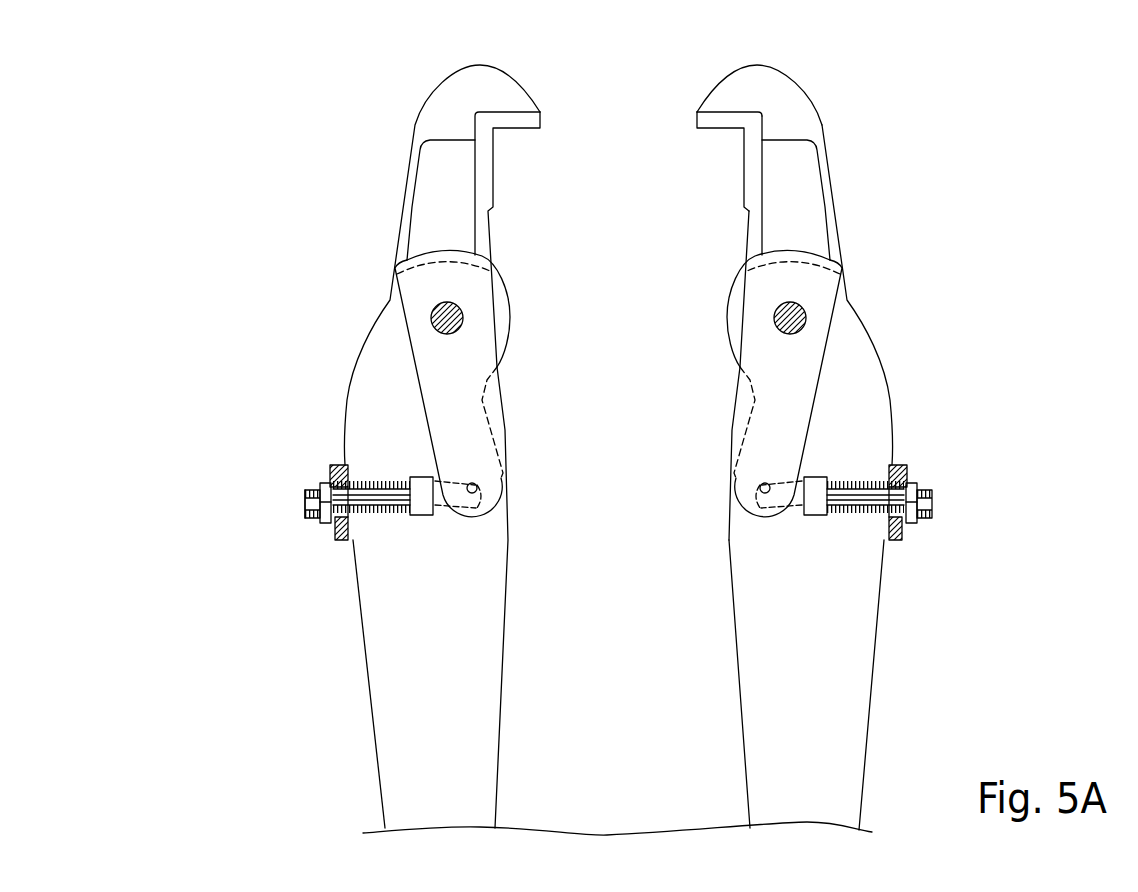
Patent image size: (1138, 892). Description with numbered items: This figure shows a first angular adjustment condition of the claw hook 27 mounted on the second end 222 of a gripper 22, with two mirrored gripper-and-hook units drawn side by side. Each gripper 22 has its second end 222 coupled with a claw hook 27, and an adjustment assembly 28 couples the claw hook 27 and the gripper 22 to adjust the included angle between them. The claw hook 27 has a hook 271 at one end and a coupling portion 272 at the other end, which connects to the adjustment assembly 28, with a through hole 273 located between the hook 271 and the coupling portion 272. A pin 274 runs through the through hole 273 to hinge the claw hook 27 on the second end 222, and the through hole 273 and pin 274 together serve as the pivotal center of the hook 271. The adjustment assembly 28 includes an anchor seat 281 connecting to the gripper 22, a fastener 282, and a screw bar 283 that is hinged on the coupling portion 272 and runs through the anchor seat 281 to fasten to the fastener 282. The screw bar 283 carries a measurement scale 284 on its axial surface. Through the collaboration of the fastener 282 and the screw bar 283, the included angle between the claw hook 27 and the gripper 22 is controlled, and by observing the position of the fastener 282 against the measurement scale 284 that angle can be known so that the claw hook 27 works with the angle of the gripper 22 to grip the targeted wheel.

The gripper 22 is at (855, 625).
The second end 222 is at (853, 347).
The claw hook 27 is at (700, 92).
The hook 271 is at (780, 100).
The coupling portion 272 is at (743, 482).
The through hole 273 is at (777, 312).
The pin 274 is at (777, 325).
The adjustment assembly 28 is at (313, 460).
The anchor seat 281 is at (323, 480).
The fastener 282 is at (327, 525).
The screw bar 283 is at (308, 517).
The measurement scale 284 is at (307, 510).